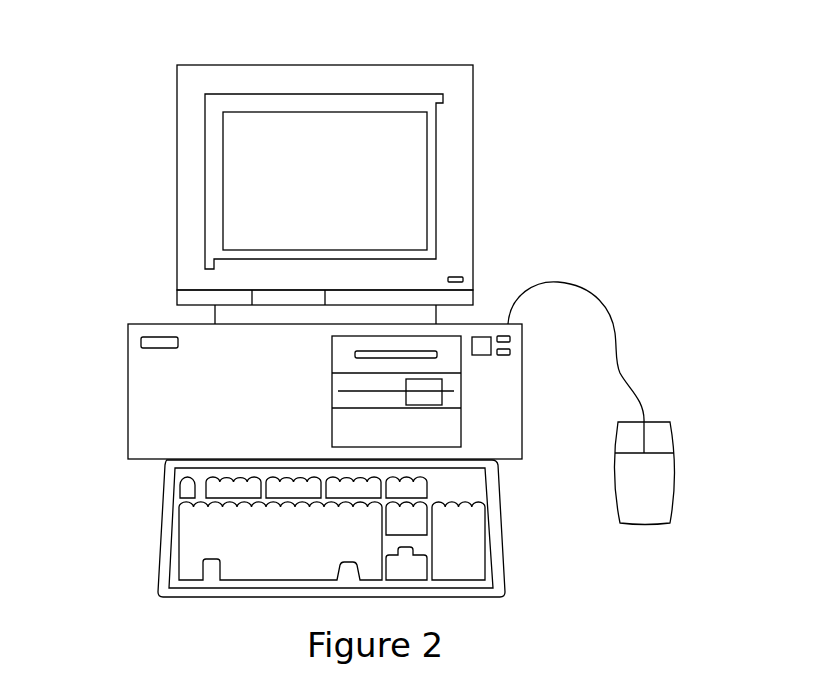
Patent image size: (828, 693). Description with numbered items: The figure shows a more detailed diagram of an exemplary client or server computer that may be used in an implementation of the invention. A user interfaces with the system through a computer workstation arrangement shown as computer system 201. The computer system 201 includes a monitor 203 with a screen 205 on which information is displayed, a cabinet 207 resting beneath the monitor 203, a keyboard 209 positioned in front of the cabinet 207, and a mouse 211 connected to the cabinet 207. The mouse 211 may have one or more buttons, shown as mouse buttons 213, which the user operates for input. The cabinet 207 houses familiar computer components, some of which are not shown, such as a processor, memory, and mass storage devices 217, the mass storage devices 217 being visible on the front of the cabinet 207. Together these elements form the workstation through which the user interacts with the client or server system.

The computer system 201 is at (490, 47).
The monitor 203 is at (473, 160).
The screen 205 is at (240, 170).
The cabinet 207 is at (157, 328).
The keyboard 209 is at (205, 598).
The mouse 211 is at (645, 510).
The mouse buttons 213 is at (633, 442).
The mass storage devices 217 is at (451, 338).